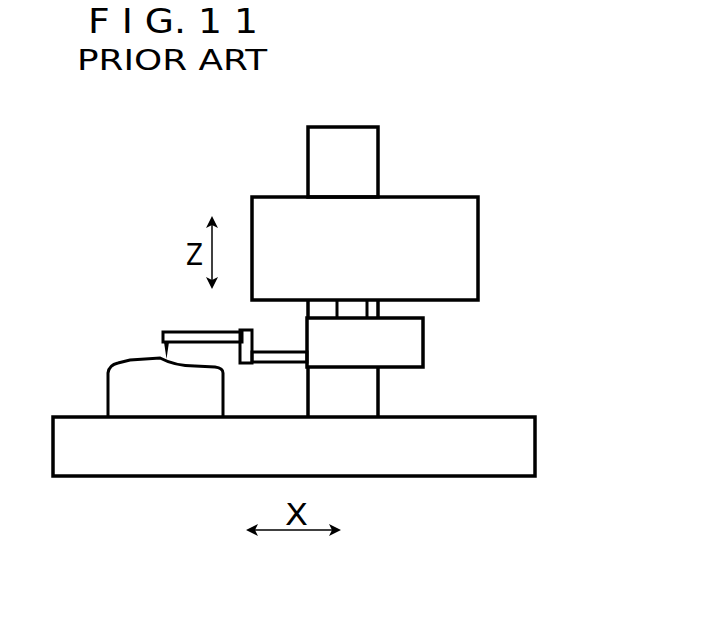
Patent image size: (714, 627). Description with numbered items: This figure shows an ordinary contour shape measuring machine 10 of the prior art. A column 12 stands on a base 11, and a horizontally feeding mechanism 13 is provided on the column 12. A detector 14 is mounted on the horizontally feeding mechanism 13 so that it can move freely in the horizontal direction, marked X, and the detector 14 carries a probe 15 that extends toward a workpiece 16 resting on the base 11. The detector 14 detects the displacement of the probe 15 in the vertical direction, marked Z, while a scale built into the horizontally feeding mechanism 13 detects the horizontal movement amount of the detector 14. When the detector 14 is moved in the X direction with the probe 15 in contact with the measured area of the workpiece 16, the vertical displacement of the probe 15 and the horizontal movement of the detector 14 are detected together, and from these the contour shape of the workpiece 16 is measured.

The contour shape measuring machine 10 is at (538, 178).
The base 11 is at (525, 450).
The column 12 is at (370, 152).
The horizontally feeding mechanism 13 is at (470, 243).
The detector 14 is at (413, 345).
The probe 15 is at (159, 356).
The workpiece 16 is at (117, 386).